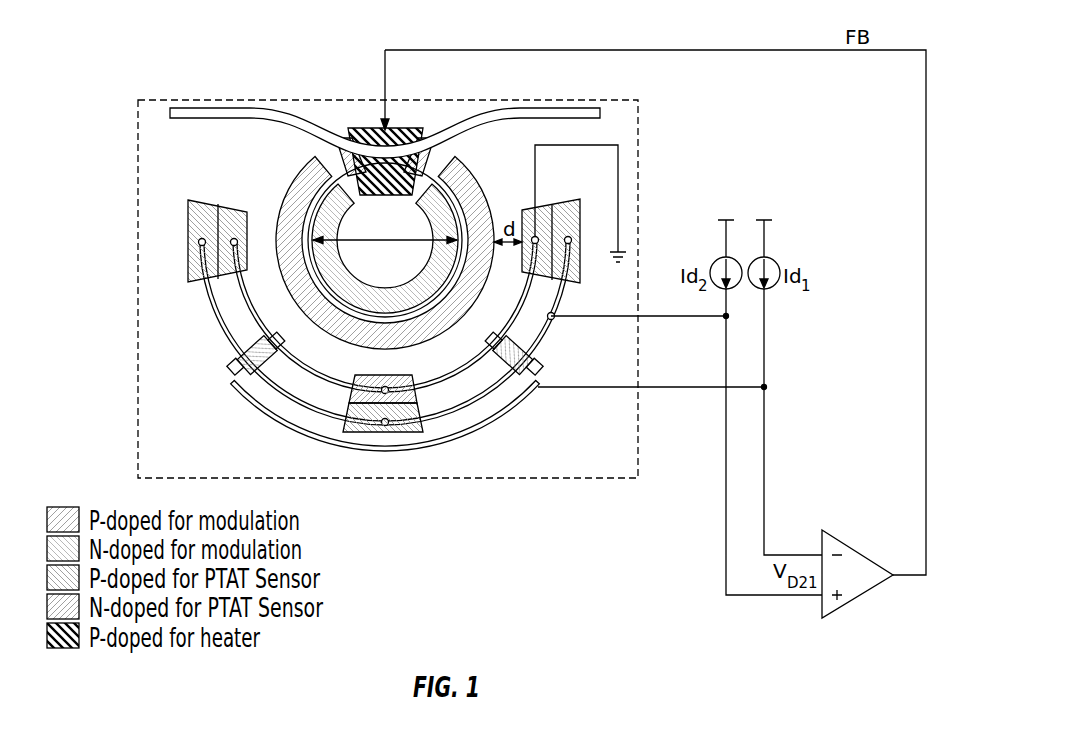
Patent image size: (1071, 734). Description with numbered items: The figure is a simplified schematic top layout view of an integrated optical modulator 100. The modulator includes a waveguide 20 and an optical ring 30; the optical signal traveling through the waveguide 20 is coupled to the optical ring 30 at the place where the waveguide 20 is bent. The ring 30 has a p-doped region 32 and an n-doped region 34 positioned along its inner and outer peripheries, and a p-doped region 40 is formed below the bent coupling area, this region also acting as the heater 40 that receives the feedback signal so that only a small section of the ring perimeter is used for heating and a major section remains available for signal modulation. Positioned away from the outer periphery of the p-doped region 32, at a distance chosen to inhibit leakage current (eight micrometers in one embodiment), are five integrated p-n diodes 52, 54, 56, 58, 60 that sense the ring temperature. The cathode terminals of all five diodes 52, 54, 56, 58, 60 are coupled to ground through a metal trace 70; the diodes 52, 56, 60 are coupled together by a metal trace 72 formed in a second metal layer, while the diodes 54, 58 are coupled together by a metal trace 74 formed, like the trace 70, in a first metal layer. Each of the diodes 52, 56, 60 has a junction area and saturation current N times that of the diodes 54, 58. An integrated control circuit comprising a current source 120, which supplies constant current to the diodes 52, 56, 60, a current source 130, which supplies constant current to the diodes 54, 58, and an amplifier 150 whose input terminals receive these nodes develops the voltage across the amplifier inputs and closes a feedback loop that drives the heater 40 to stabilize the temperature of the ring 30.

The integrated optical modulator 100 is at (138, 290).
The waveguide 20 is at (232, 119).
The optical ring 30 is at (345, 163).
The p-doped region (heater) 40 is at (428, 157).
The p-doped region 32 is at (468, 314).
The n-doped region 34 is at (418, 278).
The p-n diode 52 is at (552, 207).
The p-n diode 54 is at (517, 337).
The p-n diode 56 is at (347, 390).
The p-n diode 58 is at (252, 348).
The p-n diode 60 is at (218, 200).
The metal trace 70 is at (442, 375).
The metal trace 72 is at (478, 402).
The metal trace 74 is at (453, 443).
The current source 120 is at (723, 258).
The current source 130 is at (768, 258).
The amplifier 150 is at (850, 548).